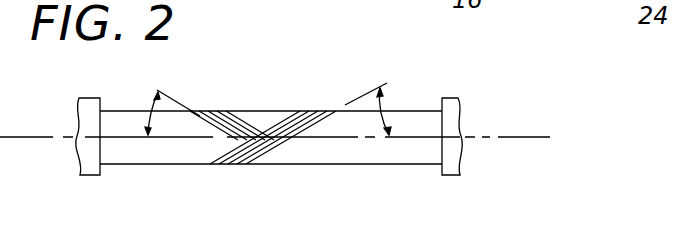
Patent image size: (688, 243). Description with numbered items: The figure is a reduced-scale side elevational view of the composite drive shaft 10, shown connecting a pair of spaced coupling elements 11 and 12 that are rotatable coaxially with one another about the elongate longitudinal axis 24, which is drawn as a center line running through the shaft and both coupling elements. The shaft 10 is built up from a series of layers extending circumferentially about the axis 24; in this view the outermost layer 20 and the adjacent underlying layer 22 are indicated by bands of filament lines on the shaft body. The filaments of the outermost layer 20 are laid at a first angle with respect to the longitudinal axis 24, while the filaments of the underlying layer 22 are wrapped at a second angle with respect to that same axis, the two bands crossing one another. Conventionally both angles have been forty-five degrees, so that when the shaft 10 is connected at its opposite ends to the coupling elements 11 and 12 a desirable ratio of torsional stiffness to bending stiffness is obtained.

The composite drive shaft 10 is at (412, 153).
The coupling element 11 is at (454, 112).
The coupling element 12 is at (93, 163).
The outermost layer 20 is at (285, 120).
The adjacent underlying layer 22 is at (239, 120).
The longitudinal axis 24 is at (549, 108).